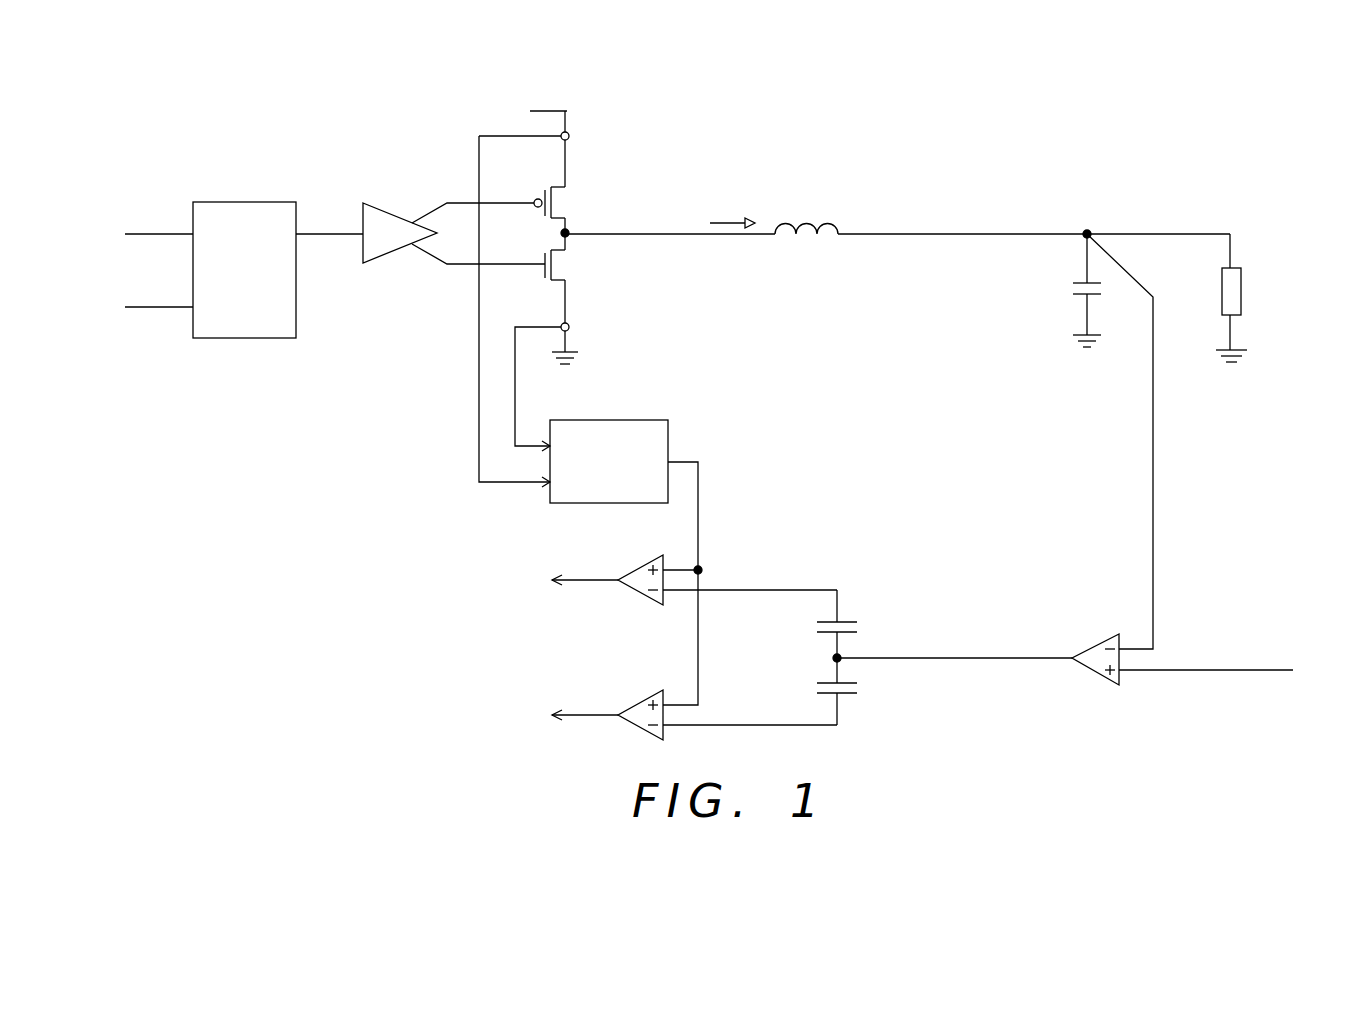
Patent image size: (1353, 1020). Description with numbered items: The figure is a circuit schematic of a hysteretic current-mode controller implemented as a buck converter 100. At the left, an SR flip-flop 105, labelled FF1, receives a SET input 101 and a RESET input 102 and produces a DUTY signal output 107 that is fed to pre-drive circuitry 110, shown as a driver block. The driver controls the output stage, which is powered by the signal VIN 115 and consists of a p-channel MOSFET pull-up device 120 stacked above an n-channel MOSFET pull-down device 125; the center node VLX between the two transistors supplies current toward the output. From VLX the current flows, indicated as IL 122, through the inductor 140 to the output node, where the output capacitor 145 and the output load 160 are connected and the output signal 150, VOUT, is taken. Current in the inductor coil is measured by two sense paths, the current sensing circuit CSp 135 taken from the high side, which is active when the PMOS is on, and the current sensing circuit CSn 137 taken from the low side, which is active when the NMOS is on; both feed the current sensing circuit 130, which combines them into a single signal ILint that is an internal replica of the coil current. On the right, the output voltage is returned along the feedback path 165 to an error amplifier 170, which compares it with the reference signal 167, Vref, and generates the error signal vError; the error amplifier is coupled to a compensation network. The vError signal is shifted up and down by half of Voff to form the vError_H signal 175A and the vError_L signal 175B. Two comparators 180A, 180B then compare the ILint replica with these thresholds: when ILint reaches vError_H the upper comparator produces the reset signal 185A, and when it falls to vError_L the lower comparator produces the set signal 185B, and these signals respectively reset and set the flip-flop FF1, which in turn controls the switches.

The buck converter 100 is at (160, 150).
The SET input 101 is at (148, 200).
The RESET input 102 is at (148, 272).
The SR flip-flop 105 is at (235, 203).
The DUTY signal output 107 is at (320, 238).
The pre-drive circuitry 110 is at (384, 207).
The signal VIN 115 is at (538, 84).
The p-channel MOSFET pull-up device 120 is at (576, 197).
The inductor current IL 122 is at (722, 193).
The n-channel MOSFET pull-down device 125 is at (577, 283).
The current sensing circuit 130 is at (618, 419).
The current sensing circuit CSp 135 is at (479, 428).
The current sensing circuit CSn 137 is at (515, 392).
The inductor 140 is at (800, 246).
The output capacitor 145 is at (1050, 305).
The output signal 150 is at (1248, 205).
The output load 160 is at (1265, 272).
The output signal of error amplifier 165 is at (1153, 578).
The reference signal 167 is at (1248, 670).
The error amplifier 170 is at (1103, 637).
The vError_H signal 175A is at (852, 606).
The vError_L signal 175B is at (857, 713).
The comparator (RESET) 180A is at (650, 561).
The comparator (SET) 180B is at (650, 696).
The reset signal 185A is at (572, 548).
The set signal 185B is at (572, 684).